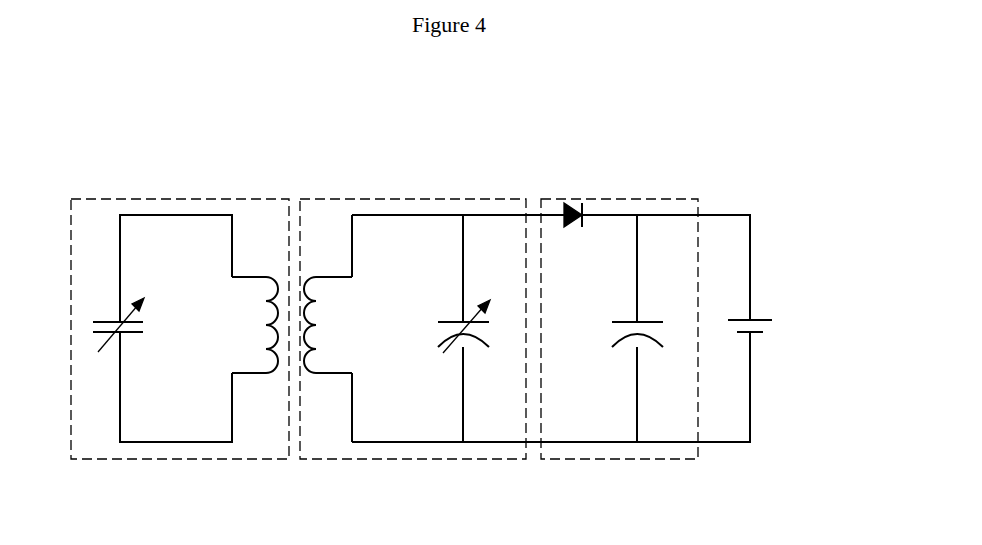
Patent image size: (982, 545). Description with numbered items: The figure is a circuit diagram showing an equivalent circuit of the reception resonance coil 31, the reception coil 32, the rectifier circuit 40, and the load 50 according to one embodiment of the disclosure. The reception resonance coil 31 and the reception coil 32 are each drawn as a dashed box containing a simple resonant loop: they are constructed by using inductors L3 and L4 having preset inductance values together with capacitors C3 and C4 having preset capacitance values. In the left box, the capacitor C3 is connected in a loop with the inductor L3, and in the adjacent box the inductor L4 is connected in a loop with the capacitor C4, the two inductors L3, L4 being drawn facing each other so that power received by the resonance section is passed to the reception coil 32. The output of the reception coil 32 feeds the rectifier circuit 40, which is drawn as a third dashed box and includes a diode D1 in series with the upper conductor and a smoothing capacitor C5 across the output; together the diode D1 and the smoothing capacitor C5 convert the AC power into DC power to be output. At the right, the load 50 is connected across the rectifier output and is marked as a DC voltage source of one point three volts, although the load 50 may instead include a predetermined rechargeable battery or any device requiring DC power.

The reception resonance coil 31 is at (180, 297).
The reception coil 32 is at (413, 297).
The rectifier circuit 40 is at (620, 297).
The load 50 is at (760, 310).
The capacitor C3 is at (113, 341).
The inductor L3 is at (255, 325).
The inductor L4 is at (333, 325).
The capacitor C4 is at (482, 328).
The diode D1 is at (577, 197).
The smoothing capacitor C5 is at (656, 328).